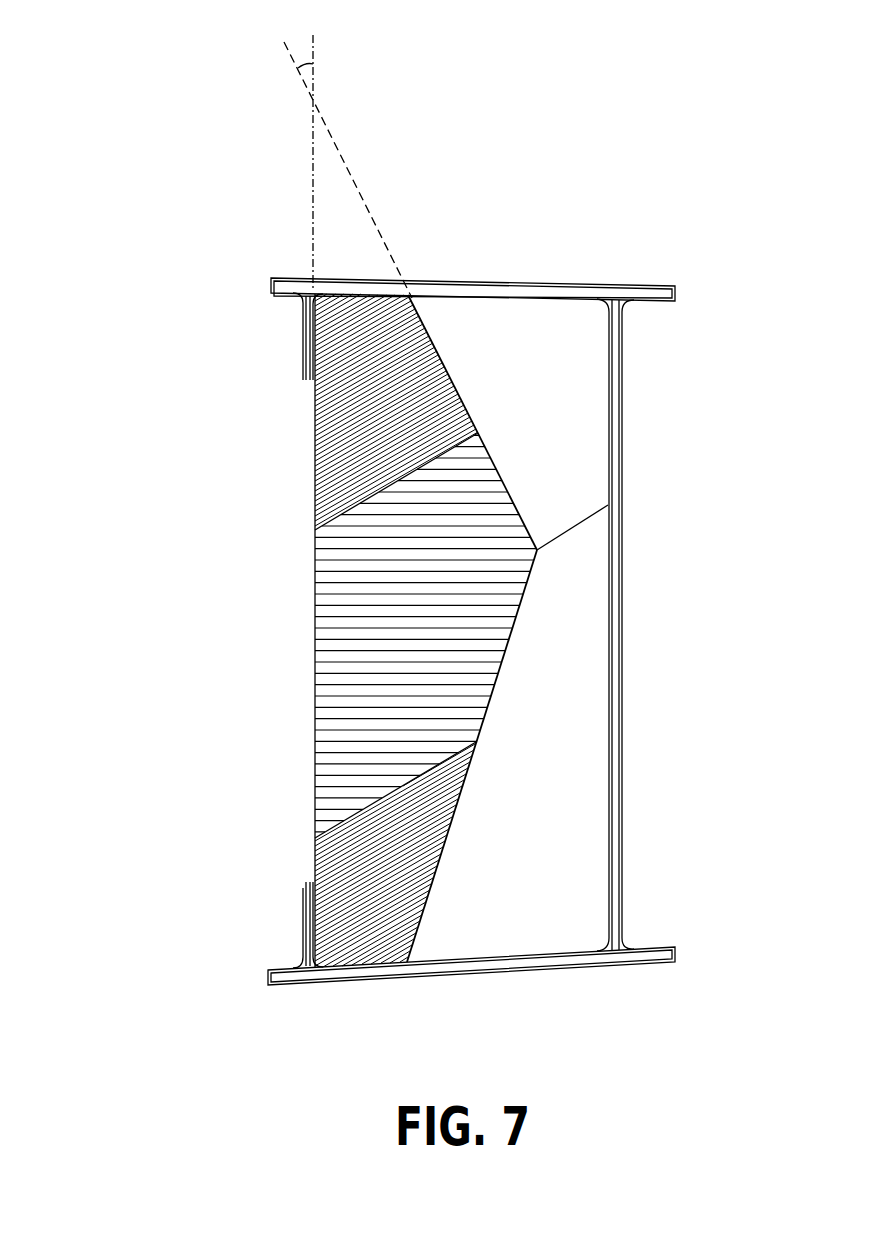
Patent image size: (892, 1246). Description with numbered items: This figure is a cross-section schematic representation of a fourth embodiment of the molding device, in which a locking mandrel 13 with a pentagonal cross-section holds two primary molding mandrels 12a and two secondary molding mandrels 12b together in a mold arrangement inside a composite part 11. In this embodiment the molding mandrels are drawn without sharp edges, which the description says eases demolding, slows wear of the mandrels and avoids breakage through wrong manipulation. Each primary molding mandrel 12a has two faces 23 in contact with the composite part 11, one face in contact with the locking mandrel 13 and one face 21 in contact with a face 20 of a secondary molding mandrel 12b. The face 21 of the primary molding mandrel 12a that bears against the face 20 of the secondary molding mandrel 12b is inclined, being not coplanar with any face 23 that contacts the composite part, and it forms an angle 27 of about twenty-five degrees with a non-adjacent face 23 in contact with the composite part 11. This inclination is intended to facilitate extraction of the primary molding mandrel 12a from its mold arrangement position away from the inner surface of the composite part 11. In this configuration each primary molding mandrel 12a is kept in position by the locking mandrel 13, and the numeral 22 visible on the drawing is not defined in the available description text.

The composite part 11 is at (620, 738).
The primary molding mandrel 12a is at (350, 885).
The secondary molding mandrel 12b is at (578, 712).
The locking mandrel 13 is at (360, 665).
The face of secondary molding mandrel 20 is at (500, 473).
The face of primary molding mandrel 21 is at (468, 312).
The web / flange 22 is at (611, 832).
The face in contact with the composite part 23 is at (303, 362).
The angle 27 is at (345, 153).